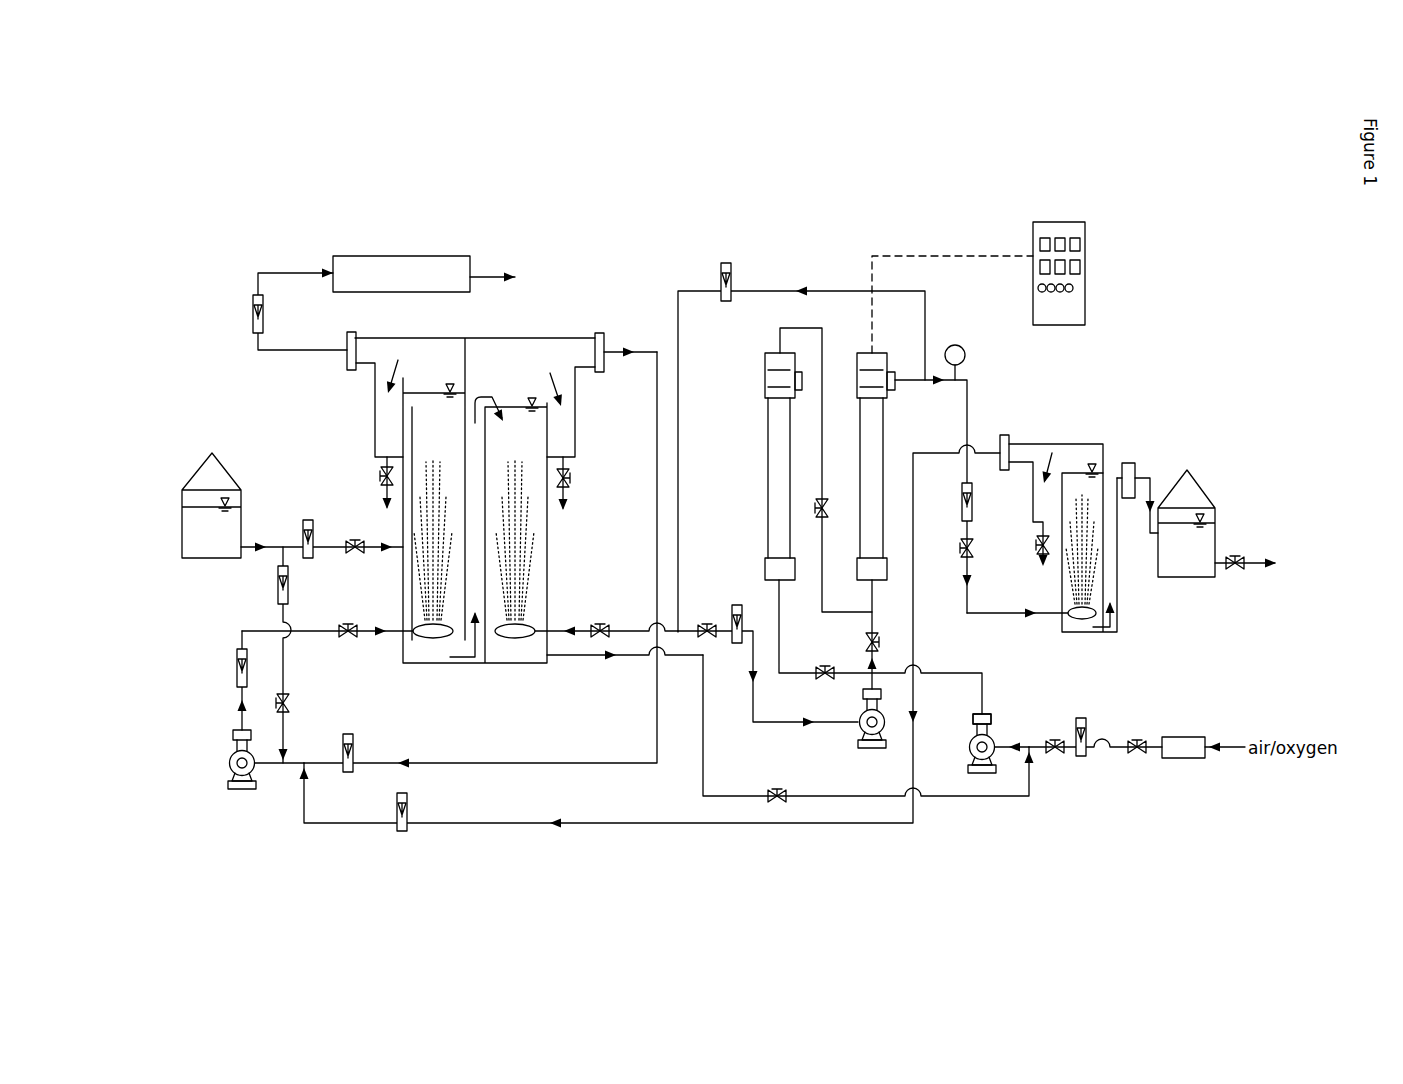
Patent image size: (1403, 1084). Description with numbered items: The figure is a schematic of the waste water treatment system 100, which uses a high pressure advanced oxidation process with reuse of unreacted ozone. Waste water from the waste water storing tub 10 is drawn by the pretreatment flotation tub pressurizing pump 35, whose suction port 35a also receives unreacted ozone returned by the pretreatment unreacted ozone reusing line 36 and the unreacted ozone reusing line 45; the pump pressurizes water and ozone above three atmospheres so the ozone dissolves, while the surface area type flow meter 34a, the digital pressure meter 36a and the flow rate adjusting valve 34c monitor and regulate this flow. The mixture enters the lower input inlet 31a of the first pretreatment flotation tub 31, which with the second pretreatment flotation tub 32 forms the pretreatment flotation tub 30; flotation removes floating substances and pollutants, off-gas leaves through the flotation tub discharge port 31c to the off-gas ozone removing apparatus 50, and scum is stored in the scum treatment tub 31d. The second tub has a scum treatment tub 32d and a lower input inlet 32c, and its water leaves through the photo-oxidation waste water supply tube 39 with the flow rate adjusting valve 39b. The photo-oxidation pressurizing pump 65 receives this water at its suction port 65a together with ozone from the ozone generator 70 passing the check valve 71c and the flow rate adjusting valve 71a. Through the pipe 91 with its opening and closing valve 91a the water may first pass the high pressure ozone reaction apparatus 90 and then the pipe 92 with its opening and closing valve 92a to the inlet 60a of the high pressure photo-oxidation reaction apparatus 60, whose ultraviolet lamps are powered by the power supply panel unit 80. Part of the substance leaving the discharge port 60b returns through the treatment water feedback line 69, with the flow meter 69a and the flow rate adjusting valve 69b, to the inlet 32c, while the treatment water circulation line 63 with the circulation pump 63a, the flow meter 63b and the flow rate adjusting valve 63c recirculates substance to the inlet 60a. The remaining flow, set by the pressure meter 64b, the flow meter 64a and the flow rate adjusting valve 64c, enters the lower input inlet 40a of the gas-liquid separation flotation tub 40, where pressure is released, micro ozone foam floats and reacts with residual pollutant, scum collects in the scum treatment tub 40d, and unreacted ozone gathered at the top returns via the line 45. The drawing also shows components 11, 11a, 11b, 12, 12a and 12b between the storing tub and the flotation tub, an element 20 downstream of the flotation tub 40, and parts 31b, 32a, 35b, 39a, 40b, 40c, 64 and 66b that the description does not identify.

The waste water treatment system 100 is at (570, 223).
The waste water storing tub 10 is at (211, 505).
The raw water supply pipe 11 is at (322, 537).
The flow meter 11a is at (308, 527).
The valve 11b is at (355, 536).
The bypass pipe 12 is at (294, 655).
The flow meter 12a is at (266, 585).
The valve 12b is at (302, 704).
The treated water tank 20 is at (1217, 523).
The pretreatment flotation tub 30 is at (475, 486).
The first pretreatment flotation tub 31 is at (433, 572).
The lower input inlet 31a is at (327, 642).
The inner wall of first tank 31b is at (430, 523).
The flotation tub discharge port 31c is at (328, 363).
The scum treatment tub 31d is at (367, 483).
The second pretreatment flotation tub 32 is at (515, 572).
The overflow pipe 32a is at (490, 398).
The lower input inlet 32c is at (606, 472).
The scum treatment tub 32d is at (585, 483).
The surface area type flow meter 34a is at (224, 668).
The flow rate adjusting valve 34c is at (402, 824).
The pretreatment flotation tub pressurizing pump 35 is at (242, 772).
The suction port 35a is at (279, 775).
The pump inlet pipe 35b is at (221, 691).
The pretreatment unreacted ozone reusing line 36 is at (480, 560).
The digital pressure meter 36a is at (348, 742).
The photo-oxidation waste water supply tube 39 is at (868, 725).
The outlet pipe 39a is at (625, 664).
The flow rate adjusting valve 39b is at (780, 784).
The gas-liquid separation flotation tub 40 is at (1078, 554).
The lower input inlet 40a is at (1017, 625).
The outlet flow meter of third tank 40b is at (1135, 487).
The gas outlet of third tank 40c is at (1046, 442).
The scum treatment tub 40d is at (1029, 520).
The unreacted ozone reusing line 45 is at (650, 644).
The off-gas ozone removing apparatus 50 is at (424, 274).
The high pressure photo-oxidation reaction apparatus 60 is at (872, 466).
The inlet 60a is at (890, 634).
The discharge port 60b is at (896, 511).
The treatment water circulation line 63 is at (768, 679).
The circulation pump 63a is at (872, 730).
The flow meter 63b is at (737, 613).
The flow rate adjusting valve 63c is at (704, 619).
The gas pipe 64 is at (933, 495).
The flow meter 64a is at (985, 502).
The pressure meter 64b is at (953, 352).
The flow rate adjusting valve 64c is at (984, 548).
The photo-oxidation pressurizing pump 65 is at (970, 743).
The suction port 65a is at (1012, 758).
The pump outlet 66b is at (964, 718).
The treatment water feedback line 69 is at (801, 460).
The flow meter 69a is at (726, 270).
The flow rate adjusting valve 69b is at (606, 619).
The ozone generator 70 is at (1203, 736).
The flow rate adjusting valve 71a is at (1137, 759).
The check valve 71c is at (1095, 748).
The power supply panel unit 80 is at (994, 287).
The high pressure ozone reaction apparatus 90 is at (783, 466).
The pipe 91 is at (880, 647).
The opening and closing valve 91a is at (826, 661).
The pipe 92 is at (826, 460).
The opening and closing valve 92a is at (838, 509).